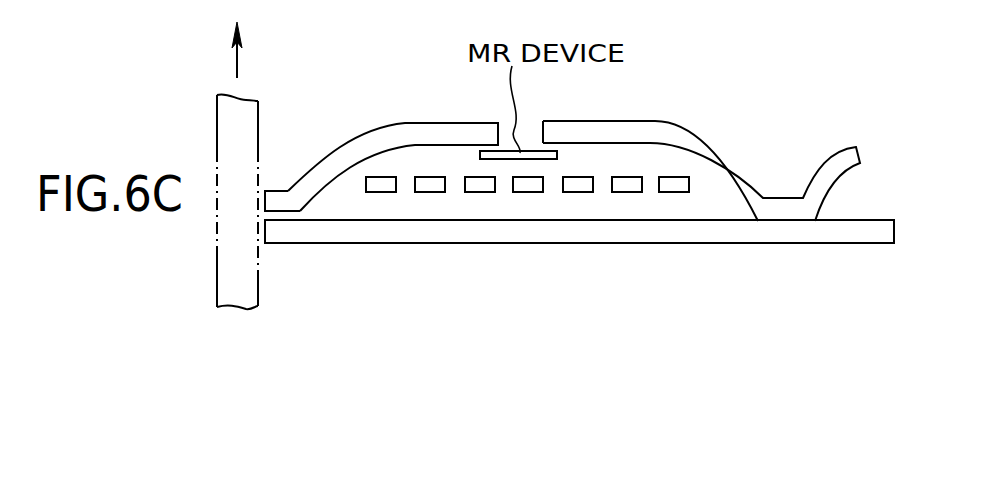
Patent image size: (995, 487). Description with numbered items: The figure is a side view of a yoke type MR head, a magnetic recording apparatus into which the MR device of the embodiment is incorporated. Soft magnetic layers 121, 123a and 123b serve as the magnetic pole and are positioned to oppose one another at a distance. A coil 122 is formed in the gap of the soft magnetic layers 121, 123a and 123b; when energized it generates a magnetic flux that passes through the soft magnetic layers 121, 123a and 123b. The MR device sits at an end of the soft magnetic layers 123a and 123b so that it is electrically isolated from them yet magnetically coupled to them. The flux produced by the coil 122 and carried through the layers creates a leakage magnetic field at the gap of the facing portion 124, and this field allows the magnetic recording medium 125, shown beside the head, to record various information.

The soft magnetic layer 121 is at (657, 232).
The coil 122 is at (433, 190).
The soft magnetic layer 123a is at (402, 134).
The soft magnetic layer 123b is at (682, 130).
The facing portion 124 is at (288, 190).
The magnetic recording medium 125 is at (250, 312).